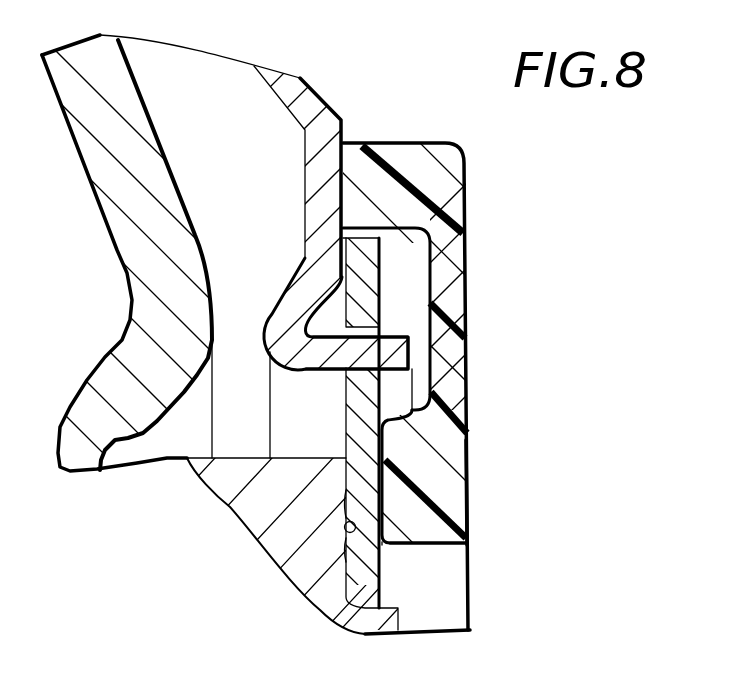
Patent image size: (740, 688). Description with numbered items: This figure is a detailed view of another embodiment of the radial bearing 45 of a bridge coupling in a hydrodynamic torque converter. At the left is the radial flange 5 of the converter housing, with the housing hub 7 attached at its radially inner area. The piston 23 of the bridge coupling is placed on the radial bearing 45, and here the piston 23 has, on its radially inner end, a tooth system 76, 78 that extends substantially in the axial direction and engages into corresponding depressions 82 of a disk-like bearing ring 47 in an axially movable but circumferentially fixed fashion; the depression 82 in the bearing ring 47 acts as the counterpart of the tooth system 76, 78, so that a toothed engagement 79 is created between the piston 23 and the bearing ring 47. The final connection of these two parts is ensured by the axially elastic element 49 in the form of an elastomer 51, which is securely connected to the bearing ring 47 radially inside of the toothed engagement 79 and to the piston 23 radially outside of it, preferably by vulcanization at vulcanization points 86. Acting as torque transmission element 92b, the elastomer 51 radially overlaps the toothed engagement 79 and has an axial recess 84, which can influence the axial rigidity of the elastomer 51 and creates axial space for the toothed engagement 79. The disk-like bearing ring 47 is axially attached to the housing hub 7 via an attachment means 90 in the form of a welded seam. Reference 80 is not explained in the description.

The radial flange 5 is at (117, 223).
The housing hub 7 is at (292, 573).
The piston 23 is at (303, 82).
The radial bearing 45 is at (452, 543).
The bearing ring 47 is at (384, 589).
The axially elastic element 49 is at (470, 482).
The elastomer 51 is at (437, 470).
The tooth system 76 is at (407, 340).
The tooth system 78 is at (430, 257).
The toothed engagement 79 is at (397, 330).
The sealing lip 80 is at (412, 372).
The depression 82 is at (357, 377).
The axial recess 84 is at (447, 183).
The vulcanization points 86 is at (362, 146).
The attachment means 90 is at (381, 548).
The torque transmission element 92b is at (467, 388).